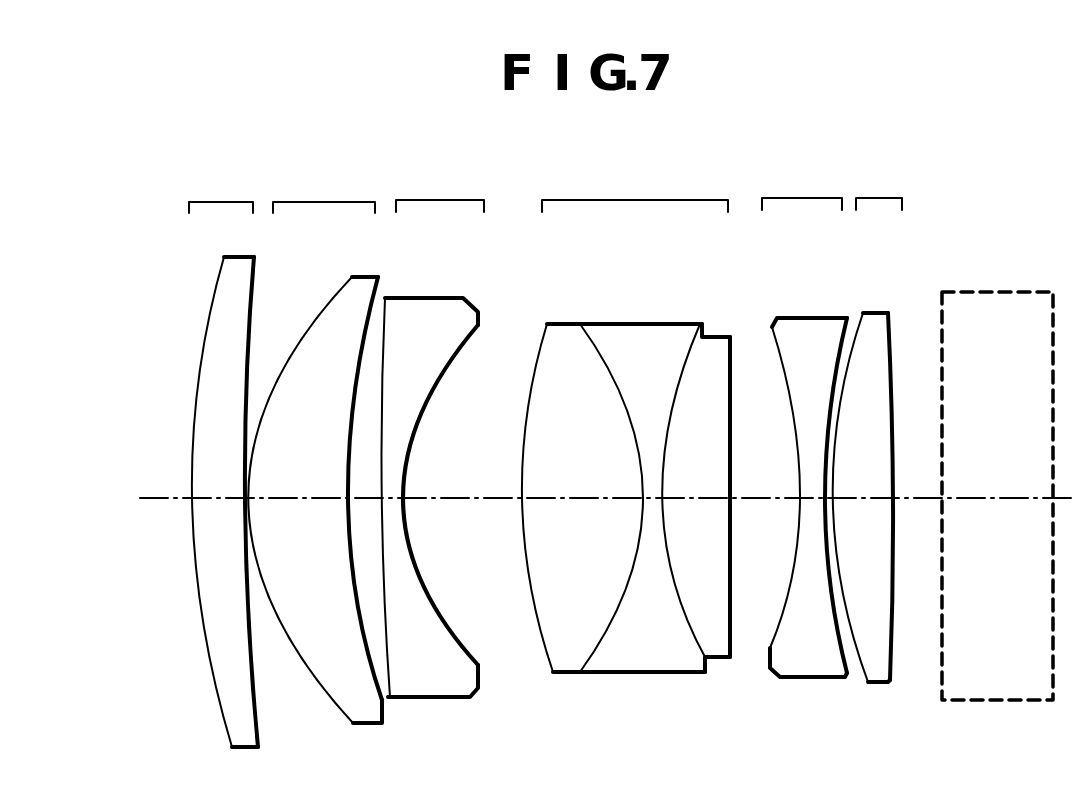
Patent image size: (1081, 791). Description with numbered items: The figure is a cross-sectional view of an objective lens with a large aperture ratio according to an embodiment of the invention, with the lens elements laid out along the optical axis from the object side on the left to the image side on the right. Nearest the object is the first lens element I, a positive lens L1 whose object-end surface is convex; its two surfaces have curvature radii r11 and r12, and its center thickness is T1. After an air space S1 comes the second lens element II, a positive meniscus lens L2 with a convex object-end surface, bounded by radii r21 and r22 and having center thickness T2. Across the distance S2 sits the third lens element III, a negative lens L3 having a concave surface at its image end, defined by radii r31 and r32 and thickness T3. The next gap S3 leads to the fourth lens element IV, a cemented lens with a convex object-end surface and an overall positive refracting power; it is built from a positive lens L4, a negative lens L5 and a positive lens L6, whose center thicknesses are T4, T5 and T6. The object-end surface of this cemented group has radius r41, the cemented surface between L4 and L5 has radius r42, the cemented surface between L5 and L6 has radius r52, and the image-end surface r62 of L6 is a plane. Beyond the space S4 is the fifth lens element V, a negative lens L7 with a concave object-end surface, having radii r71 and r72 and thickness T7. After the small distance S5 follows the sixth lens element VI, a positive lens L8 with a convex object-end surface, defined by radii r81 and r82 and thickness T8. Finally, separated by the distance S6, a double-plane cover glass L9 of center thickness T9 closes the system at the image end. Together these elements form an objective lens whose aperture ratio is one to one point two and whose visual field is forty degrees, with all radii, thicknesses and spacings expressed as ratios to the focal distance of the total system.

The first lens element I is at (221, 191).
The second lens element II is at (324, 191).
The third lens element III is at (440, 190).
The fourth lens element IV is at (635, 189).
The fifth lens element V is at (802, 187).
The sixth lens element VI is at (879, 187).
The positive lens L1 is at (212, 360).
The positive meniscus lens L2 is at (292, 378).
The negative lens L3 is at (397, 356).
The positive lens L4 is at (550, 411).
The negative lens L5 is at (620, 372).
The positive lens L6 is at (680, 428).
The negative lens L7 is at (827, 365).
The positive lens L8 is at (843, 428).
The cover glass L9 is at (968, 367).
The curvature radius r11 is at (220, 300).
The curvature radius r12 is at (252, 272).
The curvature radius r21 is at (318, 310).
The curvature radius r22 is at (372, 313).
The curvature radius r31 is at (388, 333).
The curvature radius r32 is at (462, 352).
The curvature radius r41 is at (542, 352).
The curvature radius r42 is at (595, 352).
The curvature radius r52 is at (693, 350).
The curvature radius r62 is at (733, 360).
The curvature radius r71 is at (775, 345).
The curvature radius r72 is at (843, 335).
The curvature radius r81 is at (855, 335).
The curvature radius r82 is at (891, 342).
The center thickness T1 is at (215, 481).
The center thickness T2 is at (299, 481).
The center thickness T3 is at (388, 493).
The center thickness T4 is at (579, 479).
The center thickness T5 is at (652, 502).
The center thickness T6 is at (697, 481).
The center thickness T7 is at (815, 497).
The center thickness T8 is at (862, 481).
The center thickness T9 is at (1001, 481).
The surface-to-surface distance S1 is at (244, 503).
The surface-to-surface distance S2 is at (360, 503).
The surface-to-surface distance S3 is at (463, 519).
The surface-to-surface distance S4 is at (766, 519).
The surface-to-surface distance S5 is at (828, 503).
The surface-to-surface distance S6 is at (917, 518).